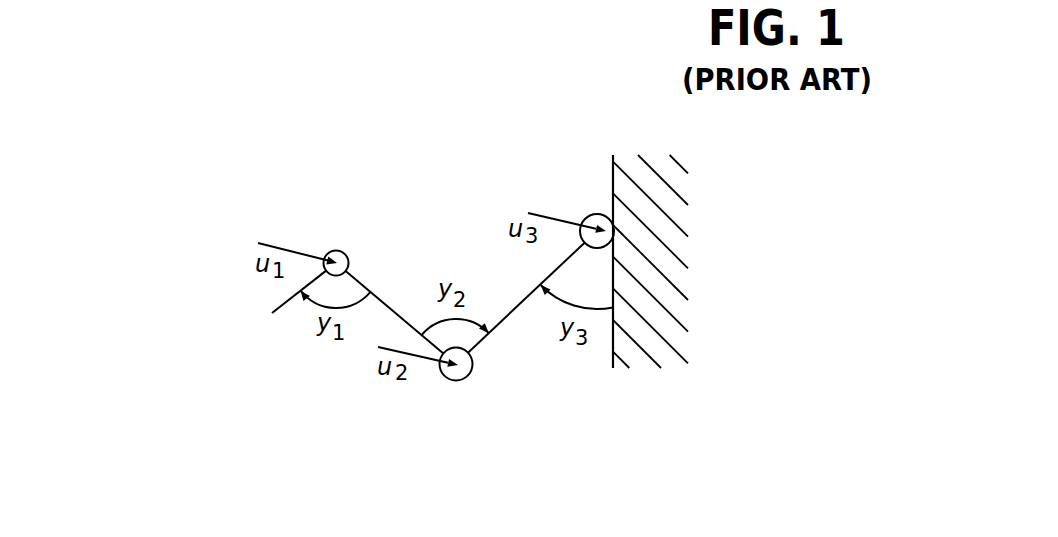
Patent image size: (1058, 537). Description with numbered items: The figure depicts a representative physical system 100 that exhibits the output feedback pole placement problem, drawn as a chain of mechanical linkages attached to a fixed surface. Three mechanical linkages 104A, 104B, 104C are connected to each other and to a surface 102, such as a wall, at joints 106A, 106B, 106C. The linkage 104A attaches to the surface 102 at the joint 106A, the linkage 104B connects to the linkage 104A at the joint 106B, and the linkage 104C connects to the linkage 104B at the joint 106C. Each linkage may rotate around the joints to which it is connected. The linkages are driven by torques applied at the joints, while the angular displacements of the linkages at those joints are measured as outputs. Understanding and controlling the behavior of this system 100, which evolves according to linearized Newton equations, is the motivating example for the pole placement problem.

The system 100 is at (160, 316).
The surface 102 is at (678, 180).
The mechanical linkage 104A is at (518, 315).
The mechanical linkage 104B is at (388, 296).
The mechanical linkage 104C is at (283, 305).
The joint 106A is at (587, 212).
The joint 106B is at (453, 382).
The joint 106C is at (332, 248).